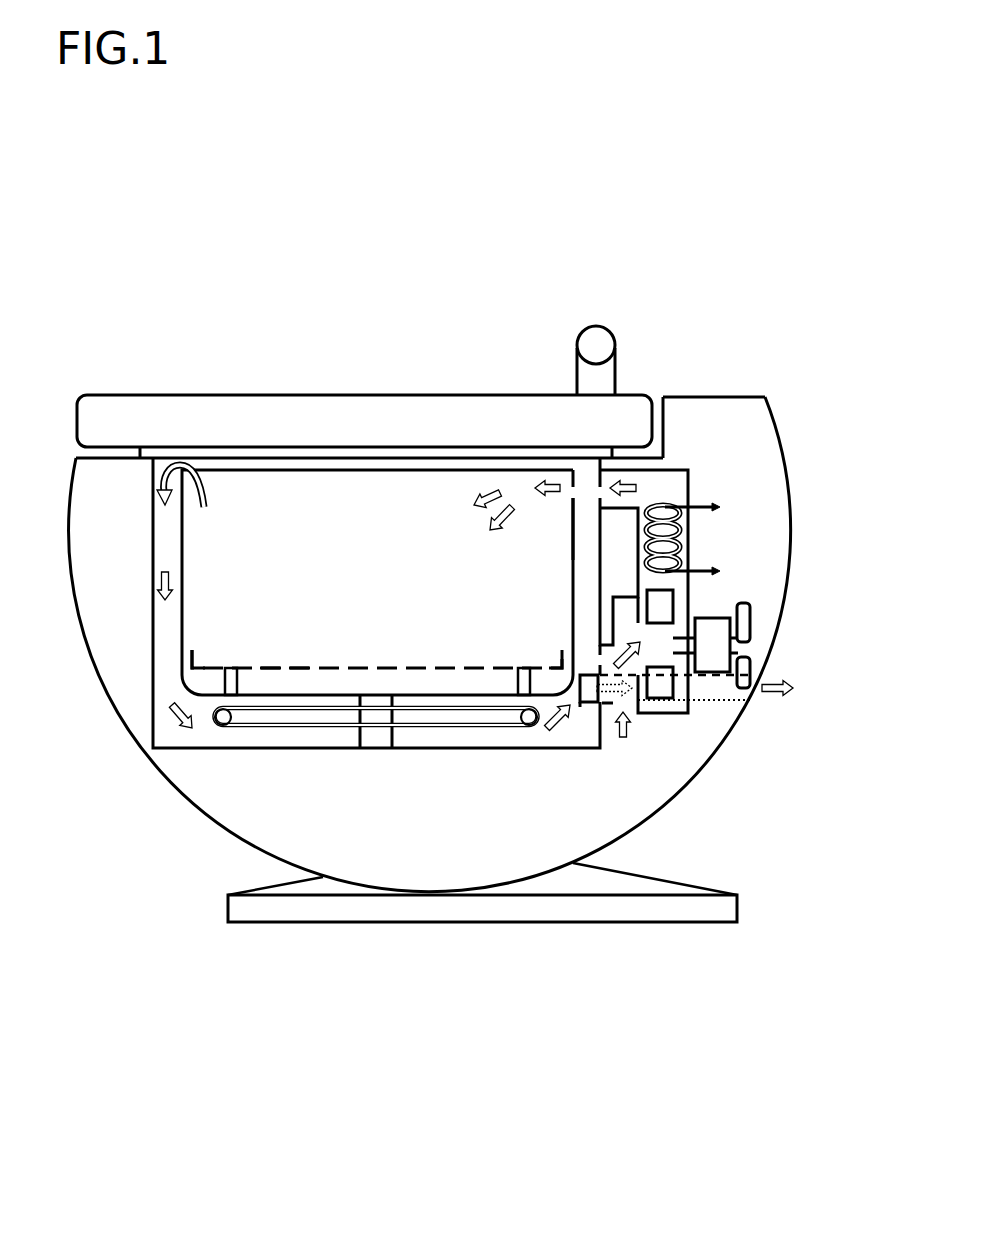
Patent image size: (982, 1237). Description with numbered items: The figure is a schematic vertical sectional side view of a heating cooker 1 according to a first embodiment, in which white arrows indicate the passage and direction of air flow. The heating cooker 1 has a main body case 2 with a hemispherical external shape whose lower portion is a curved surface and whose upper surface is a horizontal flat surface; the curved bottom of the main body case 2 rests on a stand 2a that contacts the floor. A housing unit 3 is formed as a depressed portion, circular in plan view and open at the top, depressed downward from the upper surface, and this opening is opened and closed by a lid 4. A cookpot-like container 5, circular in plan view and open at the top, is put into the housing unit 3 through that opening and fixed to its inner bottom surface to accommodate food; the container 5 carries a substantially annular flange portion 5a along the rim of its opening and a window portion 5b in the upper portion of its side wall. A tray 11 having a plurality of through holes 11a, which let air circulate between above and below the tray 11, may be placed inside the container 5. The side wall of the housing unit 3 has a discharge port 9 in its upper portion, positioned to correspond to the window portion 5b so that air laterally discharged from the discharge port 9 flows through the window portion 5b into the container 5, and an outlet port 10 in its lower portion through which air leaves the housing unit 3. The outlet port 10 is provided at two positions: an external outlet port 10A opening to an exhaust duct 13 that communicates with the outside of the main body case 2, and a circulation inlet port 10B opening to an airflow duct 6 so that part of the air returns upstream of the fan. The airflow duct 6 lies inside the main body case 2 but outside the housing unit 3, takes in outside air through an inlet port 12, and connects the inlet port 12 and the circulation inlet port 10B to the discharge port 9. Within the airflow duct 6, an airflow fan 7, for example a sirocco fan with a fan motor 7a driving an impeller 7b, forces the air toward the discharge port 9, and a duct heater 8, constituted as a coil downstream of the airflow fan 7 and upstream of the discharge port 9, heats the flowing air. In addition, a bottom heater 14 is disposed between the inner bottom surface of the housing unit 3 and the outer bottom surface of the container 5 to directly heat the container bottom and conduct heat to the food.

The heating cooker 1 is at (812, 252).
The main body case 2 is at (107, 697).
The stand 2a is at (300, 922).
The housing unit 3 is at (153, 735).
The lid 4 is at (283, 394).
The container 5 is at (182, 647).
The flange portion 5a is at (578, 470).
The window portion 5b is at (572, 487).
The airflow duct 6 is at (672, 470).
The airflow fan 7 is at (760, 633).
The fan motor 7a is at (710, 617).
The impeller 7b is at (673, 607).
The duct heater 8 is at (688, 540).
The discharge port 9 is at (602, 487).
The outlet port 10 is at (515, 996).
The external outlet port 10A is at (588, 700).
The circulation inlet port 10B is at (608, 703).
The tray 11 is at (375, 660).
The through holes 11a is at (302, 668).
The inlet port 12 is at (603, 690).
The exhaust duct 13 is at (718, 702).
The bottom heater 14 is at (252, 725).